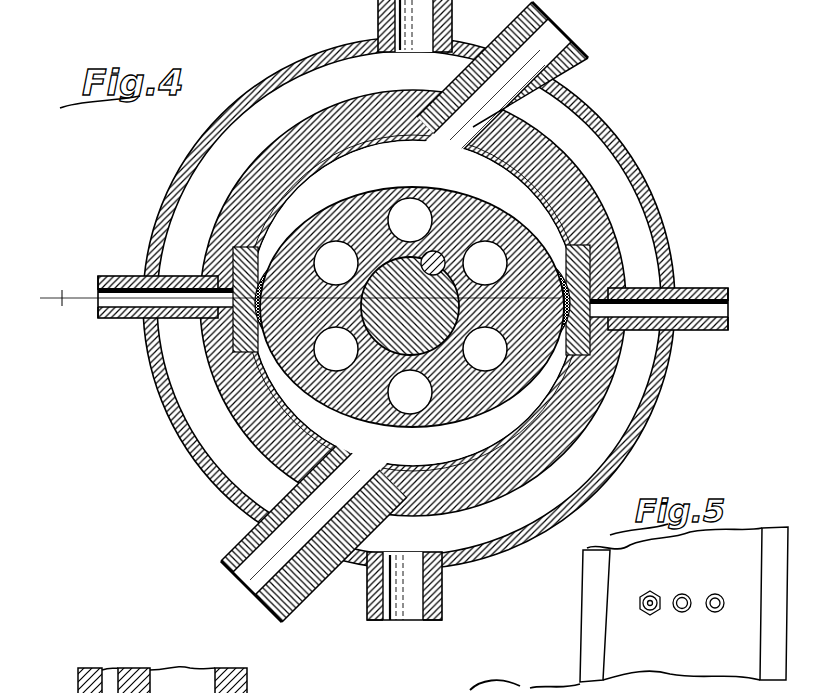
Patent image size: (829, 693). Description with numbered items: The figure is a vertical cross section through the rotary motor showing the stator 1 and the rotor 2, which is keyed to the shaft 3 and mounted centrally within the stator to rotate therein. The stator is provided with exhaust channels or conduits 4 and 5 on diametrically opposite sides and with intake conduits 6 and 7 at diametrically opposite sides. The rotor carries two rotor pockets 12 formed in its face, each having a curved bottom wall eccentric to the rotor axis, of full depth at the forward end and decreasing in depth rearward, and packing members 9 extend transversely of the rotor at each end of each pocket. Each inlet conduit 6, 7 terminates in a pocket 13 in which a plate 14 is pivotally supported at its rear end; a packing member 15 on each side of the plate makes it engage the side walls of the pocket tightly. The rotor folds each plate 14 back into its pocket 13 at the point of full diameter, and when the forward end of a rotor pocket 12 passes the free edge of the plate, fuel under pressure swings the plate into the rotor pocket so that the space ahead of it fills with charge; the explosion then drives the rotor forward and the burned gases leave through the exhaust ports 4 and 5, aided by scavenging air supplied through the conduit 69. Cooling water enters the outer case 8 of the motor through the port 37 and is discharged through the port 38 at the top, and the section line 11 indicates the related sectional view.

In FIG. 4, the stator 1 is at (600, 534).
In FIG. 5, the stator 1 is at (684, 604).
In FIG. 4, the rotor 2 is at (500, 302).
In FIG. 4, the shaft 3 is at (410, 303).
In FIG. 4, the exhaust channel 4 is at (562, 44).
In FIG. 4, the exhaust channel 5 is at (282, 592).
In FIG. 4, the intake conduit 6 is at (684, 314).
In FIG. 4, the intake conduit 7 is at (118, 277).
In FIG. 5, the intake conduit 7 is at (716, 612).
In FIG. 4, the outer case 8 is at (641, 220).
In FIG. 4, the packing member 9 is at (283, 420).
In FIG. 4, the center line 11 is at (300, 311).
In FIG. 4, the rotor pocket 12 is at (413, 303).
In FIG. 4, the pocket 13 is at (238, 272).
In FIG. 5, the pocket 13 is at (650, 612).
In FIG. 4, the plate 14 is at (266, 278).
In FIG. 4, the packing member 15 is at (582, 322).
In FIG. 4, the port 37 is at (412, 598).
In FIG. 4, the port 38 is at (384, 12).
In FIG. 5, the conduit 69 is at (683, 613).